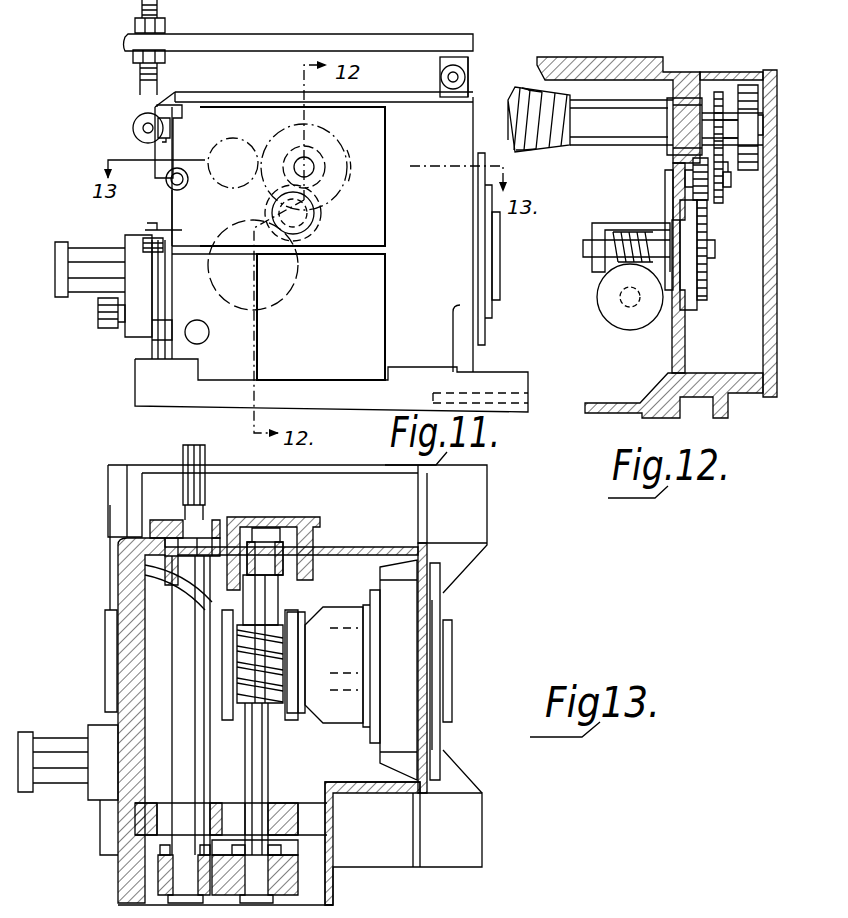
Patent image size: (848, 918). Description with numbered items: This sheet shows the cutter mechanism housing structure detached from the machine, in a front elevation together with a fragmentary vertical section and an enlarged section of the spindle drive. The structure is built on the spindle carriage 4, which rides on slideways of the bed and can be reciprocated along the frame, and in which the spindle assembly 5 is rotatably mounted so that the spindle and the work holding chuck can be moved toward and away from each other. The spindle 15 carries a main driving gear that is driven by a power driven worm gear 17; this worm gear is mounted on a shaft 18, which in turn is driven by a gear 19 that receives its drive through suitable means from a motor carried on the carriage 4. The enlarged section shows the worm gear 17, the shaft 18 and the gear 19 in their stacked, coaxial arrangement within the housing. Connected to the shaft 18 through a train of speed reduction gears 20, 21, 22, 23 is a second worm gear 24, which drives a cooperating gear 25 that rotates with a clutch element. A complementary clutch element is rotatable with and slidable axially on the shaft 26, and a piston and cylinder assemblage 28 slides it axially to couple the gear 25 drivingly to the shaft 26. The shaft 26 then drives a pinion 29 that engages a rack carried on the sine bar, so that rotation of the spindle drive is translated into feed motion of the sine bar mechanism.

In FIG. 11, the spindle carriage 4 is at (477, 102).
In FIG. 12, the spindle carriage 4 is at (675, 78).
In FIG. 13, the spindle carriage 4 is at (392, 793).
In FIG. 11, the spindle assembly 5 is at (500, 246).
In FIG. 13, the spindle assembly 5 is at (450, 606).
In FIG. 11, the spindle 15 is at (495, 277).
In FIG. 13, the spindle 15 is at (453, 658).
In FIG. 12, the worm gear 17 is at (560, 150).
In FIG. 13, the worm gear 17 is at (286, 738).
In FIG. 11, the shaft 18 is at (313, 158).
In FIG. 12, the shaft 18 is at (628, 140).
In FIG. 13, the shaft 18 is at (282, 768).
In FIG. 11, the gear 19 is at (348, 173).
In FIG. 12, the gear 19 is at (750, 90).
In FIG. 13, the gear 19 is at (308, 890).
In FIG. 11, the speed reduction gear 20 is at (348, 193).
In FIG. 12, the speed reduction gear 20 is at (718, 95).
In FIG. 11, the speed reduction gear 21 is at (323, 230).
In FIG. 12, the speed reduction gear 21 is at (723, 200).
In FIG. 11, the speed reduction gear 22 is at (305, 242).
In FIG. 12, the speed reduction gear 22 is at (698, 173).
In FIG. 11, the speed reduction gear 23 is at (290, 300).
In FIG. 12, the speed reduction gear 23 is at (707, 285).
In FIG. 12, the worm gear 24 is at (615, 250).
In FIG. 12, the cooperating gear 25 is at (602, 313).
In FIG. 12, the shaft 26 is at (626, 308).
In FIG. 11, the piston and cylinder assemblage 28 is at (84, 245).
In FIG. 13, the piston and cylinder assemblage 28 is at (62, 735).
In FIG. 11, the pinion 29 is at (103, 332).